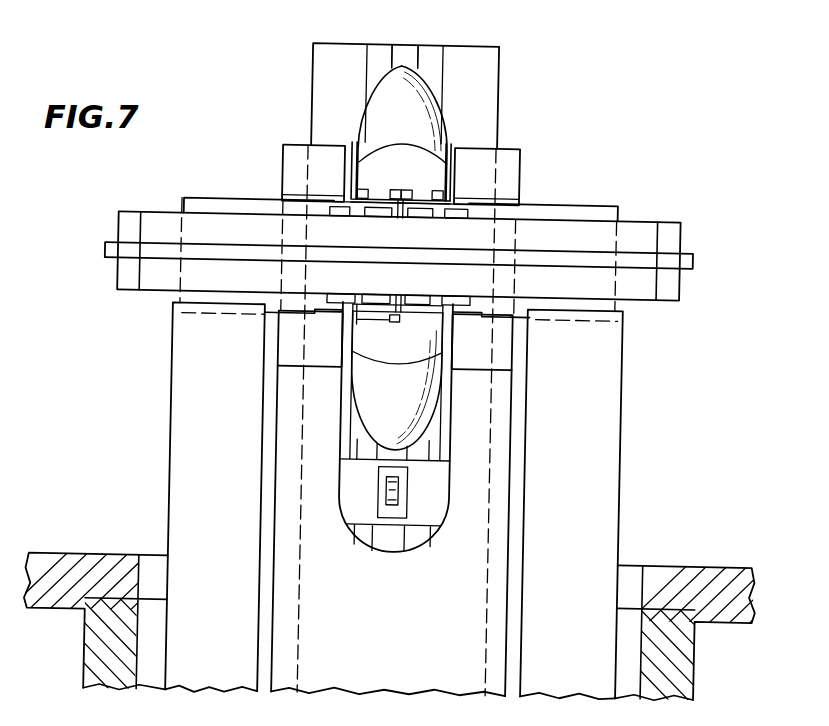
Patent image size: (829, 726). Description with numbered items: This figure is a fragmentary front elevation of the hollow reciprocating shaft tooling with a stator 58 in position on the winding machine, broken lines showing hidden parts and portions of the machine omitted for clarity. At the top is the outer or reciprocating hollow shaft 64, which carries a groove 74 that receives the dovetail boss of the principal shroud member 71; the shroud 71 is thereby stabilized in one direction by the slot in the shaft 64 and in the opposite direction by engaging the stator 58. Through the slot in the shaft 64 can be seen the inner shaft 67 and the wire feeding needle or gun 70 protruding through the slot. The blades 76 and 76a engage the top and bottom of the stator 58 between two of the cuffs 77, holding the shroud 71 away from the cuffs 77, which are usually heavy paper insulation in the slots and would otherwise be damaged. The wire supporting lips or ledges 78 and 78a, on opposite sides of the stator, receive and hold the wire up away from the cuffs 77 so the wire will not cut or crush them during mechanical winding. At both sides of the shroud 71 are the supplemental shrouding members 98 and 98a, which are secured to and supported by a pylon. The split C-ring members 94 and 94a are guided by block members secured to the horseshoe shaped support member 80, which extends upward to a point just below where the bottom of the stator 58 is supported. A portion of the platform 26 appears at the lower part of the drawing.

The platform 26 is at (691, 565).
The stator 58 is at (157, 224).
The hollow shaft 64 is at (471, 51).
The inner shaft 67 is at (372, 516).
The wire feeding needle 70 is at (388, 492).
The principal shroud member 71 is at (412, 115).
The groove 74 is at (401, 45).
The blade 76 is at (410, 192).
The blade 76a is at (408, 312).
The cuffs 77 is at (392, 236).
The lip 78 is at (358, 190).
The lip 78a is at (392, 323).
The horseshoe shaped support member 80 is at (176, 472).
The split C-ring member 94 is at (241, 203).
The split C-ring member 94a is at (586, 202).
The supplemental shrouding member 98 is at (285, 150).
The supplemental shrouding member 98a is at (507, 161).